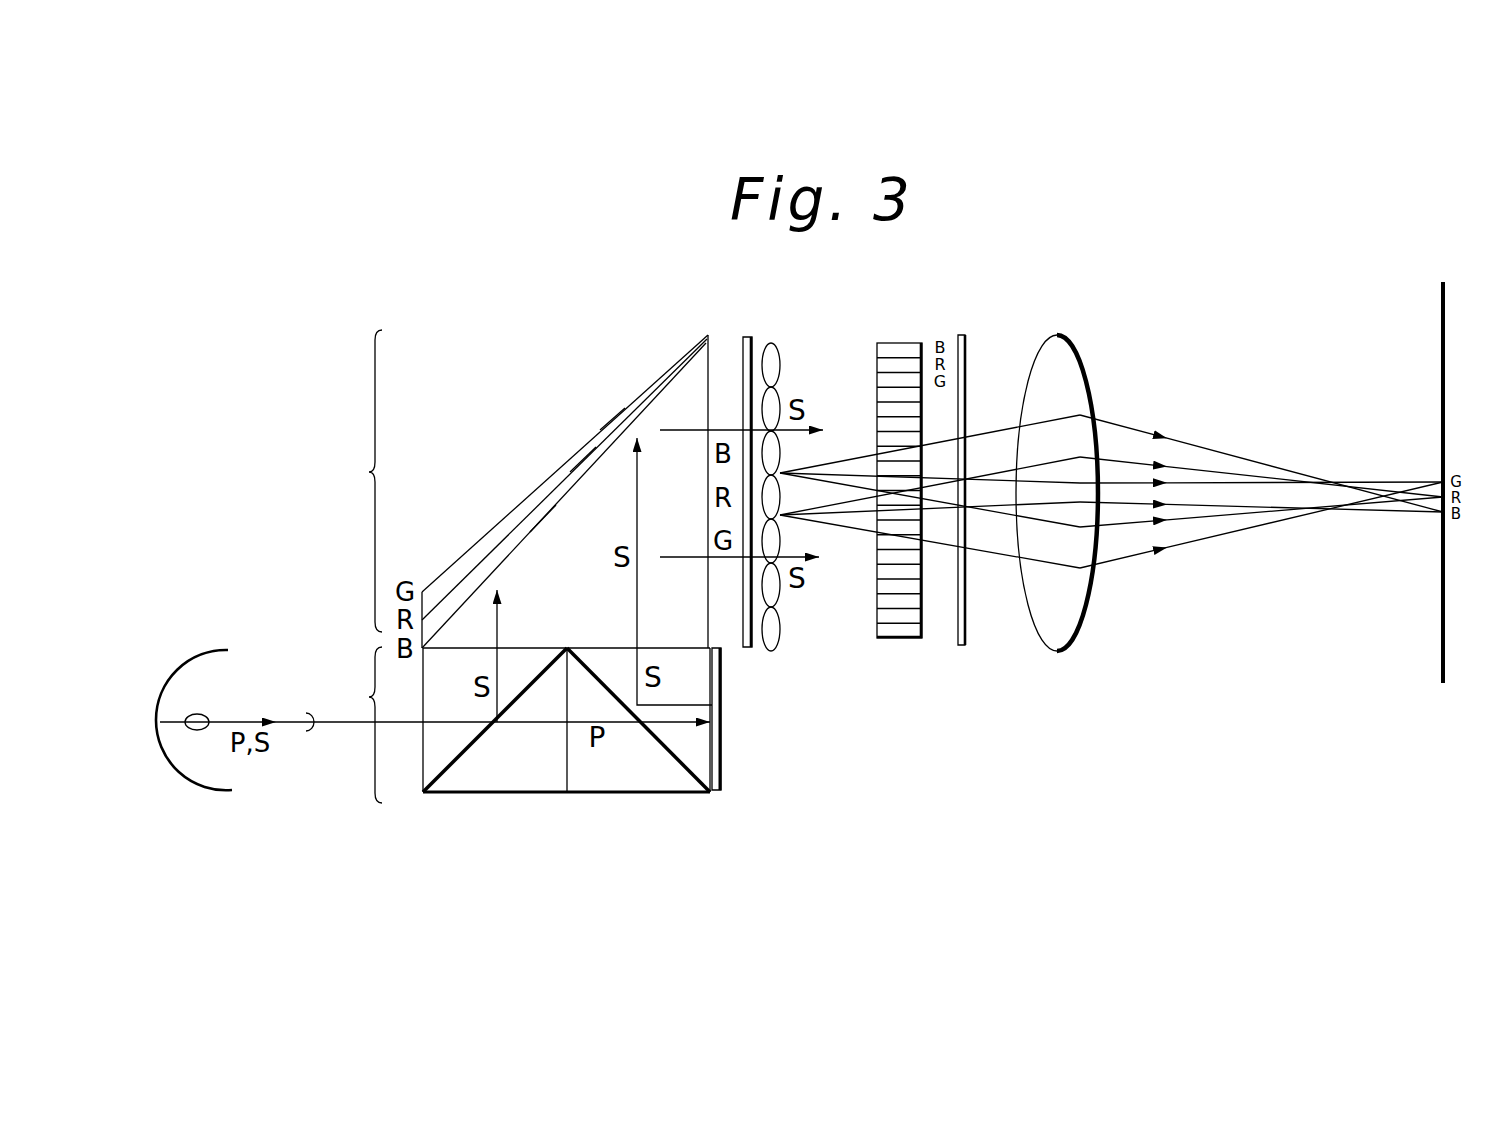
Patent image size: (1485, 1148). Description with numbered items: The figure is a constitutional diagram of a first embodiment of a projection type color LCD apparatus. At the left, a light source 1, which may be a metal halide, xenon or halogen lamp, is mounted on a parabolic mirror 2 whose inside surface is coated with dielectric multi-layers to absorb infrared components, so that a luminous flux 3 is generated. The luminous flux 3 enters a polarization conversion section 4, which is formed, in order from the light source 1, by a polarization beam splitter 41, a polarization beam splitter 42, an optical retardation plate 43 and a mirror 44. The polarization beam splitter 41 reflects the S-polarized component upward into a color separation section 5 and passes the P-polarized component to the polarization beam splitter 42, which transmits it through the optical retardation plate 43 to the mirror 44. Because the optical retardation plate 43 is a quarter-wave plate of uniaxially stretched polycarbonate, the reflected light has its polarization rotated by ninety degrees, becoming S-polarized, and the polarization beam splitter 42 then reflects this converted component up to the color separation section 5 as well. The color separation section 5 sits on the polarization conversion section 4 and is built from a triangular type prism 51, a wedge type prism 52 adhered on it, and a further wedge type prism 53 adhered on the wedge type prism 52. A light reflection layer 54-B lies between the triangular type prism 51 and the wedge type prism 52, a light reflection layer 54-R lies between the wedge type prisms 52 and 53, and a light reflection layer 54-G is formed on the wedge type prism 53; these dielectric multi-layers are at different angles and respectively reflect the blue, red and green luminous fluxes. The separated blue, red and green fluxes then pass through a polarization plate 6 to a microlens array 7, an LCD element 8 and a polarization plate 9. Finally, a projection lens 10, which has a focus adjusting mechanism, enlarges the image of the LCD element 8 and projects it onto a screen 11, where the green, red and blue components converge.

The light source 1 is at (205, 729).
The parabolic mirror 2 is at (207, 787).
The luminous flux 3 is at (311, 716).
The polarization conversion section 4 is at (369, 697).
The color separation section 5 is at (369, 472).
The polarization beam splitter 41 is at (485, 772).
The polarization beam splitter 42 is at (613, 770).
The optical retardation plate 43 is at (712, 793).
The mirror 44 is at (724, 762).
The triangular type prism 51 is at (460, 640).
The wedge type prism 52 is at (460, 597).
The wedge type prism 53 is at (480, 553).
The light reflection layer 54-G is at (612, 412).
The light reflection layer 54-R is at (583, 456).
The light reflection layer 54-B is at (542, 511).
The polarization plate 6 is at (748, 648).
The microlens array 7 is at (778, 635).
The LCD element 8 is at (910, 640).
The polarization plate 9 is at (966, 622).
The projection lens 10 is at (1065, 338).
The screen 11 is at (1440, 322).